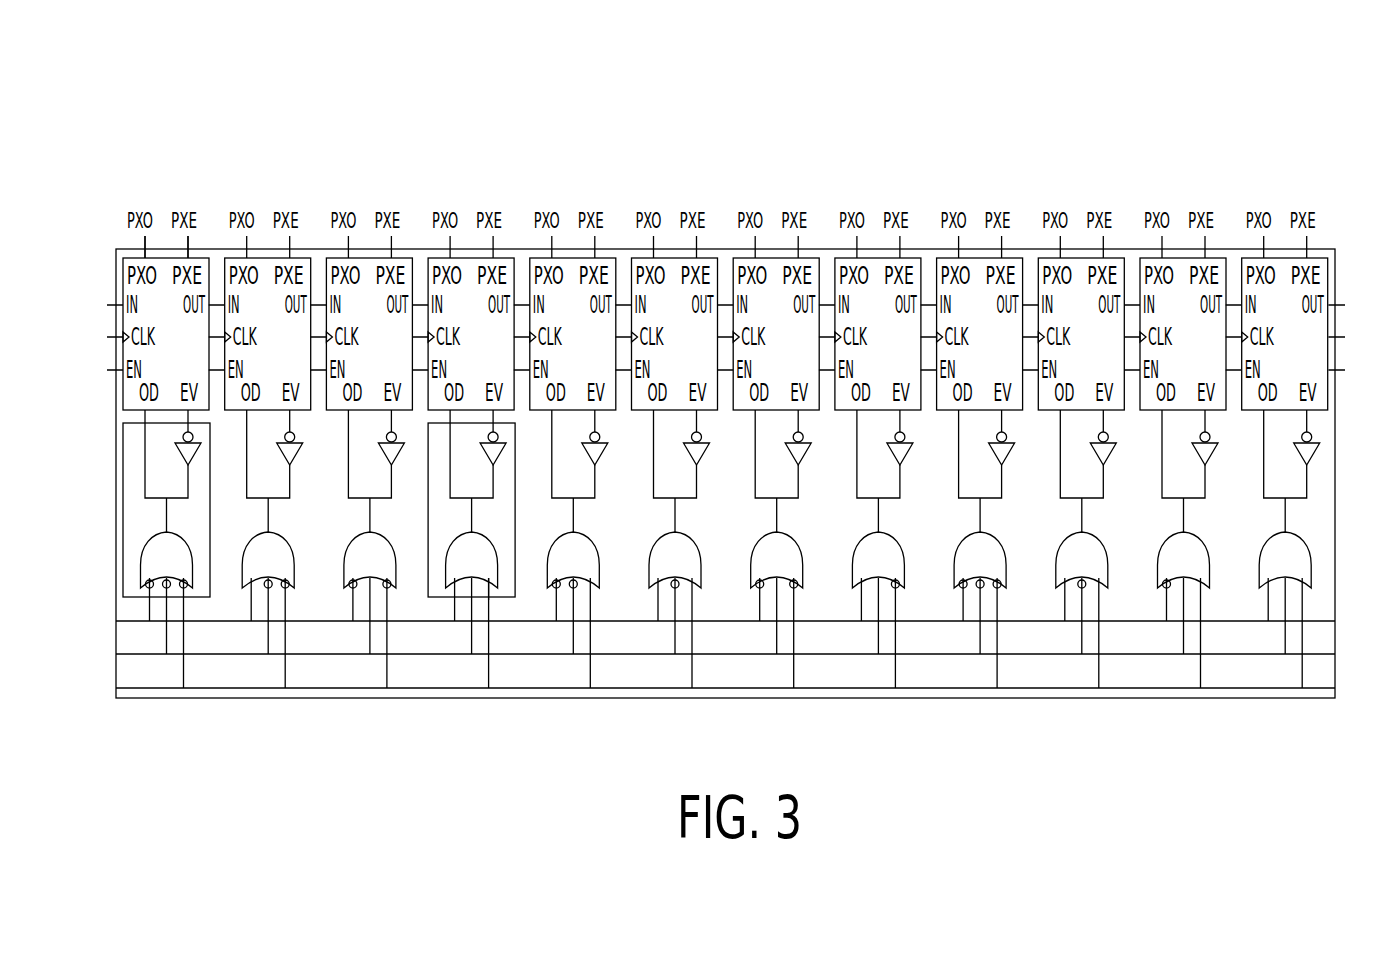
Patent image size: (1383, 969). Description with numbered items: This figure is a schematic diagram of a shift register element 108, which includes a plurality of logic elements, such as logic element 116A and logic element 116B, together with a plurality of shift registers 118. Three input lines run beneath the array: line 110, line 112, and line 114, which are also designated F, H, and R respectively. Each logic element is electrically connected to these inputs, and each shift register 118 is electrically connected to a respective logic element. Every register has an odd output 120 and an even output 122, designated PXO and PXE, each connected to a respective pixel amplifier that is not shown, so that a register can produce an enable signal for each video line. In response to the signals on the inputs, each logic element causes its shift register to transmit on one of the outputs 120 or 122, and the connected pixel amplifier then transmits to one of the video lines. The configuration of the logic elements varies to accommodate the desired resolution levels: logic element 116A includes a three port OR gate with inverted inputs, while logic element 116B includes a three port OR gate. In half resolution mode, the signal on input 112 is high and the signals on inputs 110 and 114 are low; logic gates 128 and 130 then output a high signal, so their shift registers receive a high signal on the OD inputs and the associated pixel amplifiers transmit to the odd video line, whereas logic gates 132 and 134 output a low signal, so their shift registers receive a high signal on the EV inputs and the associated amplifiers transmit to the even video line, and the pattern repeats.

The shift register element 108 is at (1150, 128).
The line 110 is at (115, 620).
The line 112 is at (112, 658).
The line 114 is at (112, 703).
The logic element 116A is at (206, 499).
The logic element 116B is at (511, 499).
The shift register 118 is at (121, 267).
The odd output 120 is at (144, 239).
The even output 122 is at (189, 239).
The logic gate 128 is at (188, 574).
The logic gate 130 is at (288, 586).
The logic gate 132 is at (390, 586).
The logic gate 134 is at (490, 578).